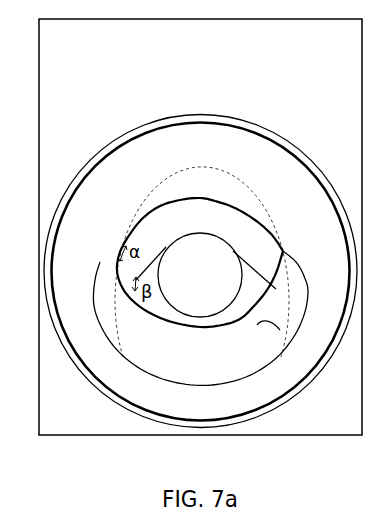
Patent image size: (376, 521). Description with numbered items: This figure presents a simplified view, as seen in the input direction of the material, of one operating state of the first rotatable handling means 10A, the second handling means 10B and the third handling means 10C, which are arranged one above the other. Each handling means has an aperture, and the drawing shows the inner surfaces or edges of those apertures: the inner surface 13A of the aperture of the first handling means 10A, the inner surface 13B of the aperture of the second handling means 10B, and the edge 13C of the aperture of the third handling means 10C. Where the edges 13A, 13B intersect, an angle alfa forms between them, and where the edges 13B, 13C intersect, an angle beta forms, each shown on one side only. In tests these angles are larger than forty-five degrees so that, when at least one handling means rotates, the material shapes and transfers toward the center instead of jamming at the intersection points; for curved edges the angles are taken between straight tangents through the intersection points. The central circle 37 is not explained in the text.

The first handling means 10A is at (235, 152).
The second handling means 10B is at (280, 330).
The third handling means 10C is at (147, 228).
The inner surface of aperture 13A is at (100, 317).
The inner surface of aperture 13B is at (118, 273).
The edge of aperture 13C is at (158, 238).
The central shaft 37 is at (206, 282).